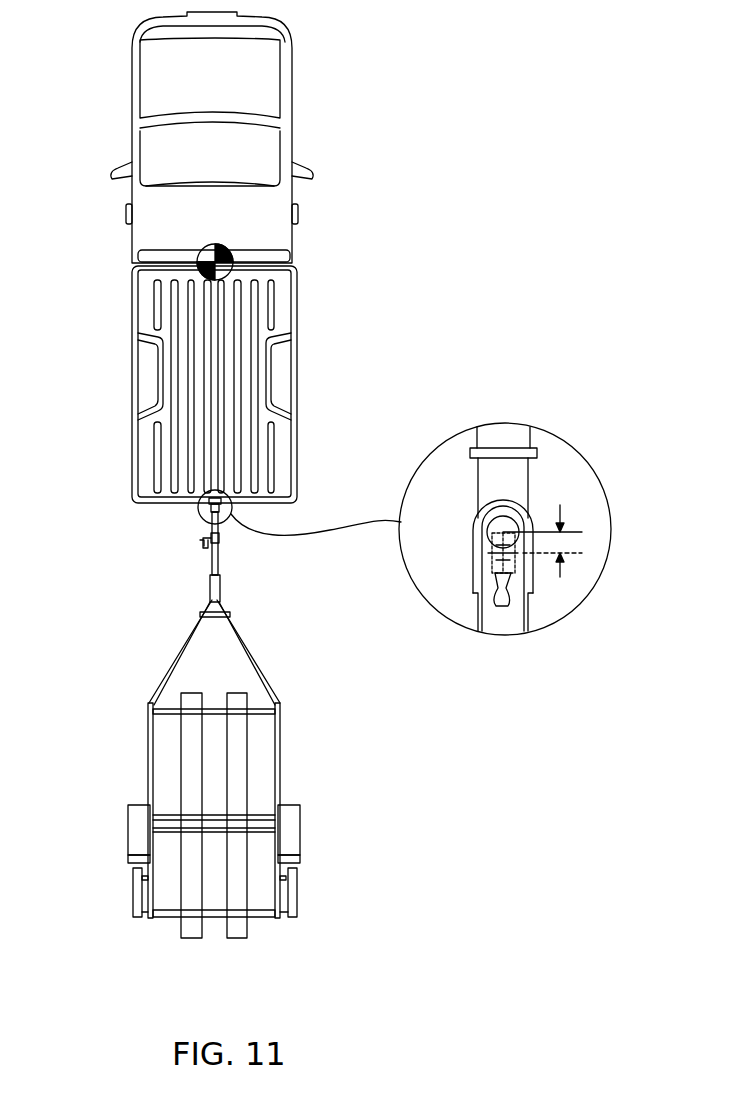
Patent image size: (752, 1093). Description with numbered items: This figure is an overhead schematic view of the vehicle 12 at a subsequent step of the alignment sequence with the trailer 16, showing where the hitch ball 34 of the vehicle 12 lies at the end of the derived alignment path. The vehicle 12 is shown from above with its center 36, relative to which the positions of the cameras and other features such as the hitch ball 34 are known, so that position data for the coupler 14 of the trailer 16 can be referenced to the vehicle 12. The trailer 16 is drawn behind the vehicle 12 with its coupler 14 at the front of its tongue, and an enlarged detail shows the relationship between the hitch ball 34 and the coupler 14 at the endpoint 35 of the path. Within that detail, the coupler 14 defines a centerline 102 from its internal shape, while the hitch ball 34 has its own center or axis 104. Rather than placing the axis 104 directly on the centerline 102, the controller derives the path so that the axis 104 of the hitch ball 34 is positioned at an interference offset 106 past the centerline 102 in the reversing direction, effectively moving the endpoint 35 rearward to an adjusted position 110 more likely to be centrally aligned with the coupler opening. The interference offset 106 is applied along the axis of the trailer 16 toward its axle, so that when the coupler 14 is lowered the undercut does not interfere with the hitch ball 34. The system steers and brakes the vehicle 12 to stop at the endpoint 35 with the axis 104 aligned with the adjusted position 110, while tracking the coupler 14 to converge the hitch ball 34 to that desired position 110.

The vehicle 12 is at (308, 54).
The coupler 14 is at (205, 513).
The trailer 16 is at (147, 739).
The hitch ball 34 is at (492, 560).
The endpoint 35 is at (208, 258).
The center 36 is at (224, 268).
The centerline 102 is at (504, 531).
The axis 104 is at (513, 565).
The interference offset 106 is at (562, 575).
The adjusted position 110 is at (580, 610).